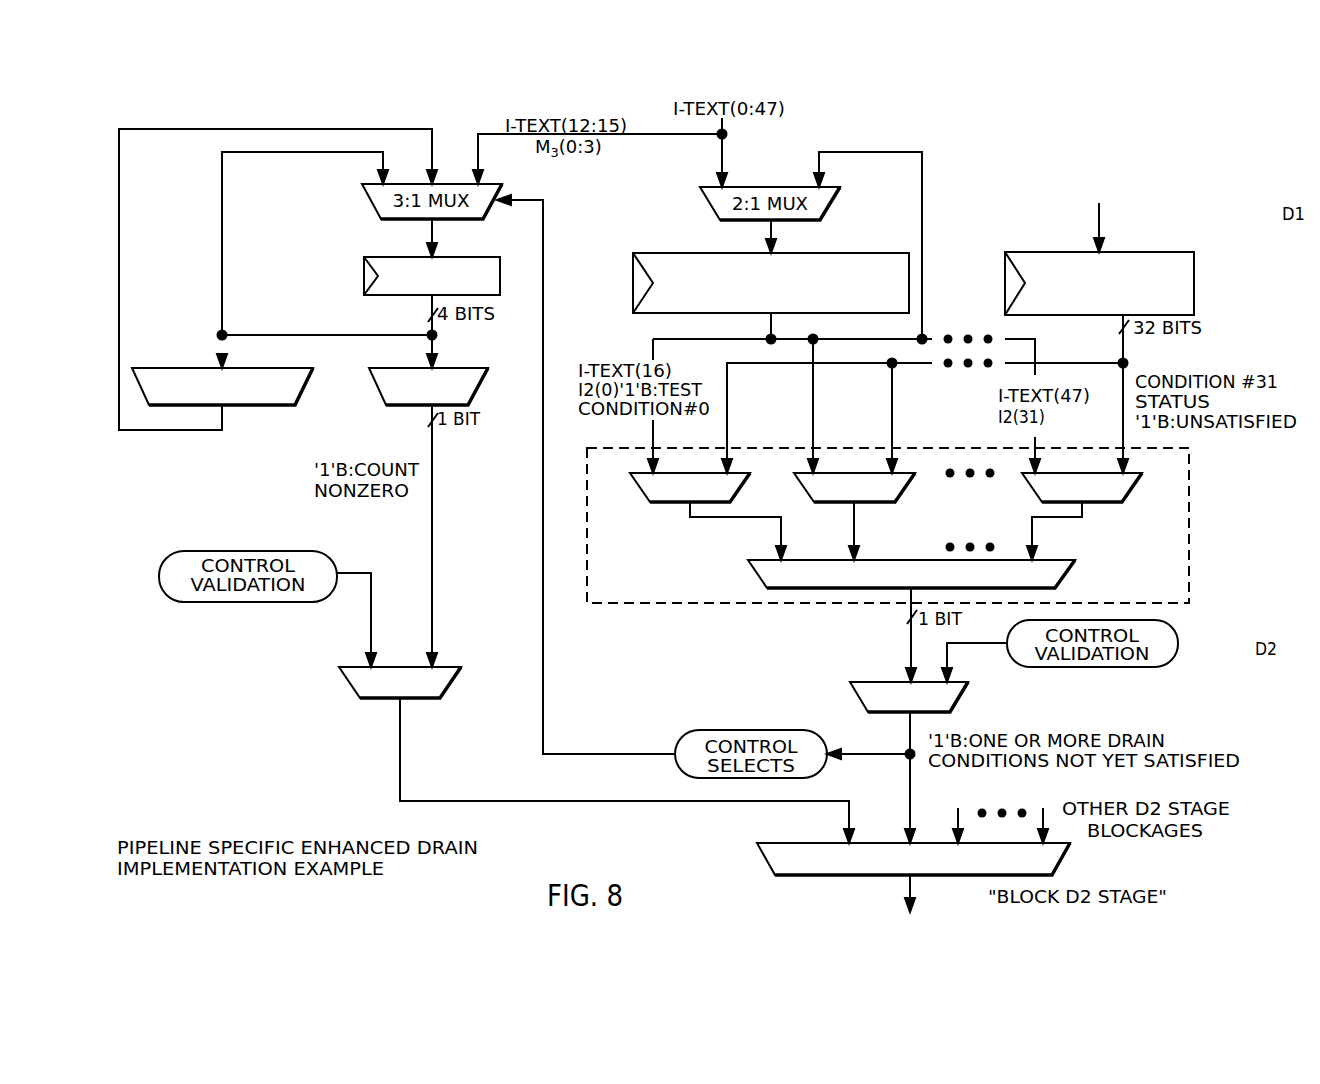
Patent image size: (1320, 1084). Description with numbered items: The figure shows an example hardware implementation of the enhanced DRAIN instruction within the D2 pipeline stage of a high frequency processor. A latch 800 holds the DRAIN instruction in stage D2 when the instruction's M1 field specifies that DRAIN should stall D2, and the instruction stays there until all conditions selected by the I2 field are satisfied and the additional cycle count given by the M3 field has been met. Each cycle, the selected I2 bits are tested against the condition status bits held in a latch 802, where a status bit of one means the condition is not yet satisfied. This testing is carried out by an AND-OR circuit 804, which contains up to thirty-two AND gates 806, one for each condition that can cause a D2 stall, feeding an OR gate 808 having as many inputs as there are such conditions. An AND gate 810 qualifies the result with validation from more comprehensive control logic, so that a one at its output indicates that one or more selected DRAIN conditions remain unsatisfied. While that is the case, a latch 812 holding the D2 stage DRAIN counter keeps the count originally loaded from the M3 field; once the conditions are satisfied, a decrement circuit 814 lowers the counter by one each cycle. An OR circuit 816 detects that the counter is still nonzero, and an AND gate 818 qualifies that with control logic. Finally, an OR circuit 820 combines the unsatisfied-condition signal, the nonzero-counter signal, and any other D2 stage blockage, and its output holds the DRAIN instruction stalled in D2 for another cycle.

The latch 800 is at (668, 253).
The latch 802 is at (1165, 252).
The AND-OR circuit 804 is at (672, 603).
The AND gates 806 is at (658, 503).
The OR gate 808 is at (758, 578).
The AND gate 810 is at (855, 695).
The latch 812 is at (364, 272).
The decrement circuit 814 is at (255, 407).
The OR circuit 816 is at (384, 406).
The AND gate 818 is at (346, 690).
The OR circuit 820 is at (762, 852).